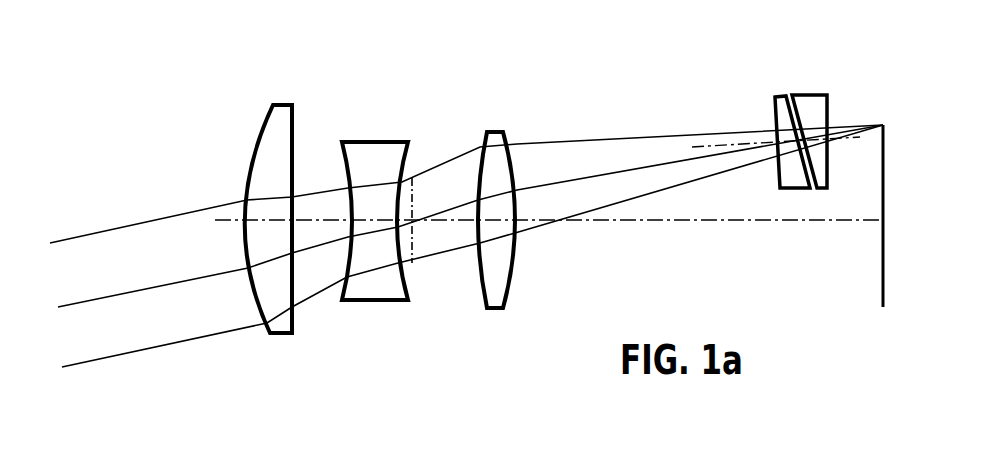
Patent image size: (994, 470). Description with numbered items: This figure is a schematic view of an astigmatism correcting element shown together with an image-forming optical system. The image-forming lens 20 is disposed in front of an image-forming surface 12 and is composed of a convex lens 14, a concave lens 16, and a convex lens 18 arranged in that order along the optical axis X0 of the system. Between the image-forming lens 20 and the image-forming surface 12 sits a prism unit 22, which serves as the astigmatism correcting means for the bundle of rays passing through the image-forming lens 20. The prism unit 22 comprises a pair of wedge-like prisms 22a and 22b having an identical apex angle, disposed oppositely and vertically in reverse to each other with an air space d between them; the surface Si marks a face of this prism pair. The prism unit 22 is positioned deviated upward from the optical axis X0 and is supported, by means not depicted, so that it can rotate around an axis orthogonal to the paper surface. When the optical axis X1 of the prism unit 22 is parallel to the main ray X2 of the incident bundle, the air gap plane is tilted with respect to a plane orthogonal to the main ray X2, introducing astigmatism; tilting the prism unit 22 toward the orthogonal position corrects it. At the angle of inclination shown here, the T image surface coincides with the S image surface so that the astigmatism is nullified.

The image-forming surface 12 is at (907, 243).
The convex lens 14 is at (283, 333).
The concave lens 16 is at (378, 300).
The convex lens 18 is at (493, 261).
The image-forming lens 20 is at (380, 273).
The prism unit 22 is at (812, 95).
The wedge-like prism 22a is at (778, 95).
The wedge-like prism 22b is at (837, 115).
The plate surface Si is at (778, 178).
The air space d is at (817, 188).
The optical axis X0 is at (747, 223).
The optical axis of the prism unit X1 is at (700, 147).
The main ray X2 is at (637, 142).